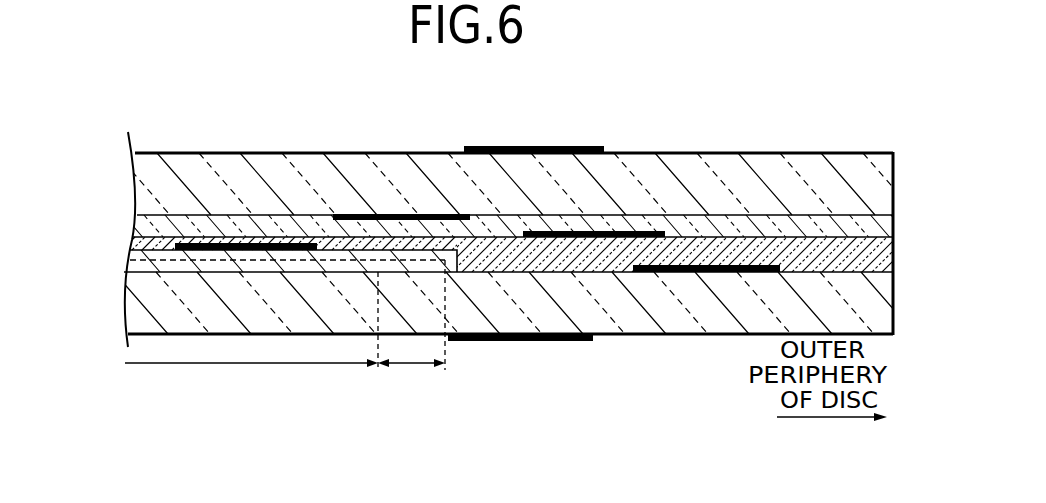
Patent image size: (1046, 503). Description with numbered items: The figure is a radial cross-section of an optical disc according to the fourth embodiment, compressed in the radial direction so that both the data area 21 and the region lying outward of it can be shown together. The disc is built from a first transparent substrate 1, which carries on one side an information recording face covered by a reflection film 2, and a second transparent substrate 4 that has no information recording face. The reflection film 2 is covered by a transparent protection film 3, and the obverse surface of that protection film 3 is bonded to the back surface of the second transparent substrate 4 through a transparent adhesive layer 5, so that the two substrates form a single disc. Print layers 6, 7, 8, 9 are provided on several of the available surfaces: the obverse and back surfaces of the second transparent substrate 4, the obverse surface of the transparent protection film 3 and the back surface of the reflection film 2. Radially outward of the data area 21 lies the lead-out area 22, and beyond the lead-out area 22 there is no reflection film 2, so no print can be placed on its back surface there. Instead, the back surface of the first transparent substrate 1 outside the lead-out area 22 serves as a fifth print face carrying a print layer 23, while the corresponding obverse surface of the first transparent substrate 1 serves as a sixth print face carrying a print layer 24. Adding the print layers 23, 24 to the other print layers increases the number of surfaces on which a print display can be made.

The first transparent substrate 1 is at (133, 315).
The reflection film 2 is at (133, 258).
The transparent protection film 3 is at (603, 258).
The second transparent substrate 4 is at (140, 195).
The adhesive layer 5 is at (137, 230).
The print layer 6 is at (525, 147).
The print layer 7 is at (398, 214).
The print layer 8 is at (592, 231).
The print layer 9 is at (232, 243).
The data area 21 is at (215, 363).
The lead-out area 22 is at (415, 363).
The print layer 23 is at (697, 272).
The print layer 24 is at (525, 341).